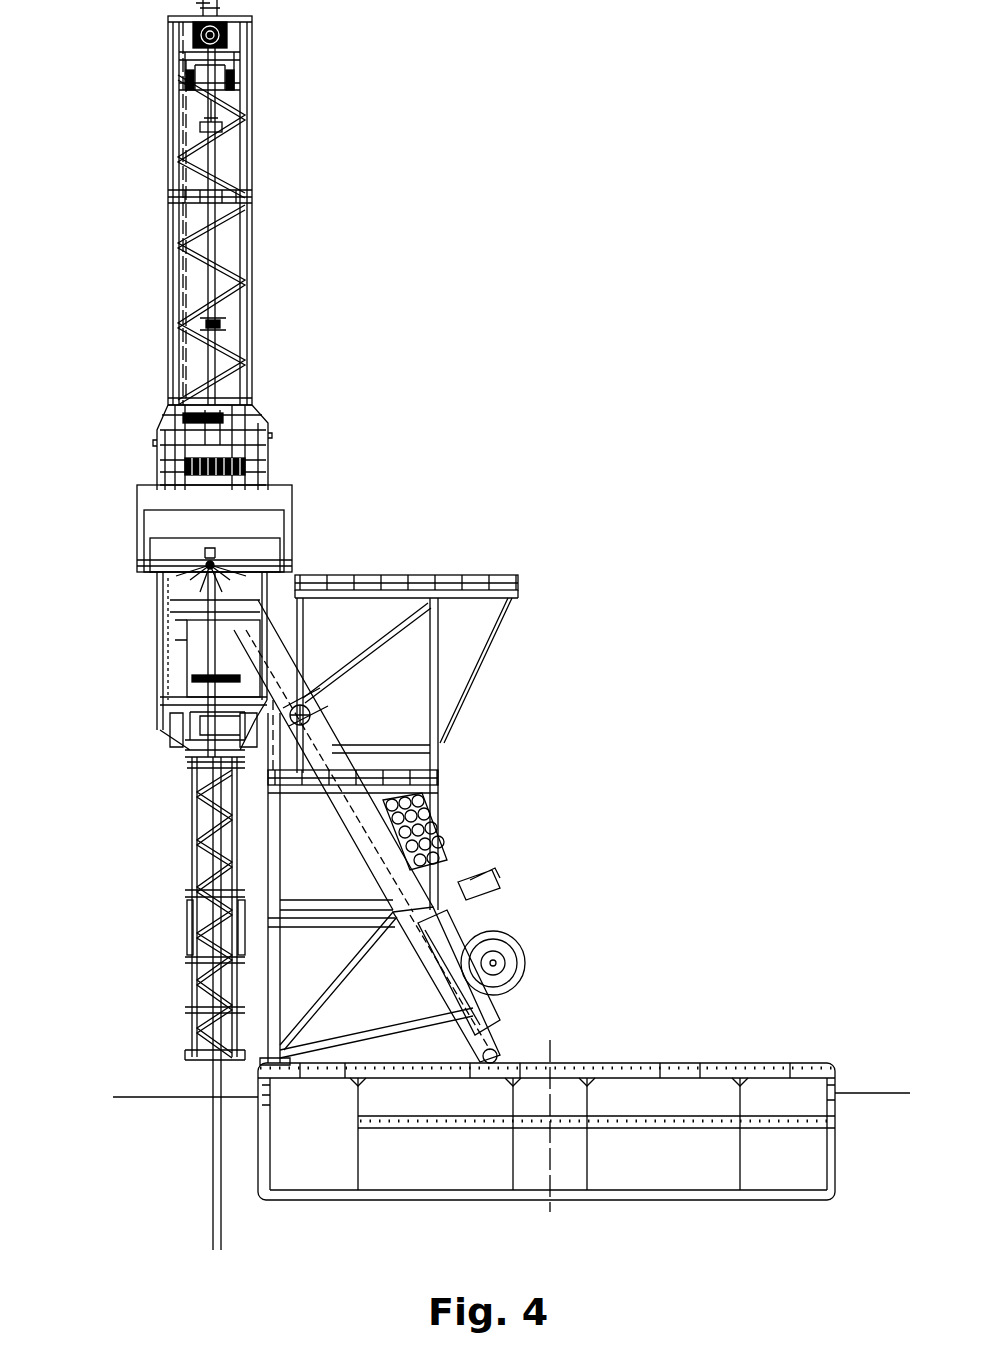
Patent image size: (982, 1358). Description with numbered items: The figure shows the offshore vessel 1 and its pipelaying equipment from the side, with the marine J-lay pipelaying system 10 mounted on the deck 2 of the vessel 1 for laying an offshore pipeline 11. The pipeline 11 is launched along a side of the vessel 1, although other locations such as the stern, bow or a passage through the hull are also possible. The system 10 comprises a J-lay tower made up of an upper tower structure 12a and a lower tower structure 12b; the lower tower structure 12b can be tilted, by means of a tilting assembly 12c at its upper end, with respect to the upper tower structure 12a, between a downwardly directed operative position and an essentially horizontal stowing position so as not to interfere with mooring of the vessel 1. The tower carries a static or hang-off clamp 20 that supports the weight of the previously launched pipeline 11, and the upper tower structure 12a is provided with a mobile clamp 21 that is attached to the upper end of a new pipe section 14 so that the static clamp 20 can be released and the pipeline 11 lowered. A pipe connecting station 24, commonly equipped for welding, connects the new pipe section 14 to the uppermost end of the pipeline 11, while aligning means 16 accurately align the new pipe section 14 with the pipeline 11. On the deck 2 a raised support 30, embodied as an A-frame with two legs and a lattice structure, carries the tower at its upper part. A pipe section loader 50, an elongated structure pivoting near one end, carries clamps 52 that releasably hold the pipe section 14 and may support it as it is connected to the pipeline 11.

The offshore vessel 1 is at (511, 1094).
The deck 2 is at (700, 1062).
The marine J-lay pipelaying system 10 is at (375, 532).
The offshore pipeline 11 is at (222, 1234).
The upper tower structure 12a is at (239, 202).
The lower tower structure 12b is at (158, 938).
The tilting assembly 12c is at (158, 767).
The pipe section 14 is at (212, 240).
The aligning means 16 is at (240, 455).
The static clamp 20 is at (205, 568).
The mobile clamp 21 is at (222, 118).
The pipe connecting station 24 is at (244, 521).
The raised support 30 is at (500, 808).
The pipe section loader 50 is at (185, 283).
The clamps 52 is at (218, 324).